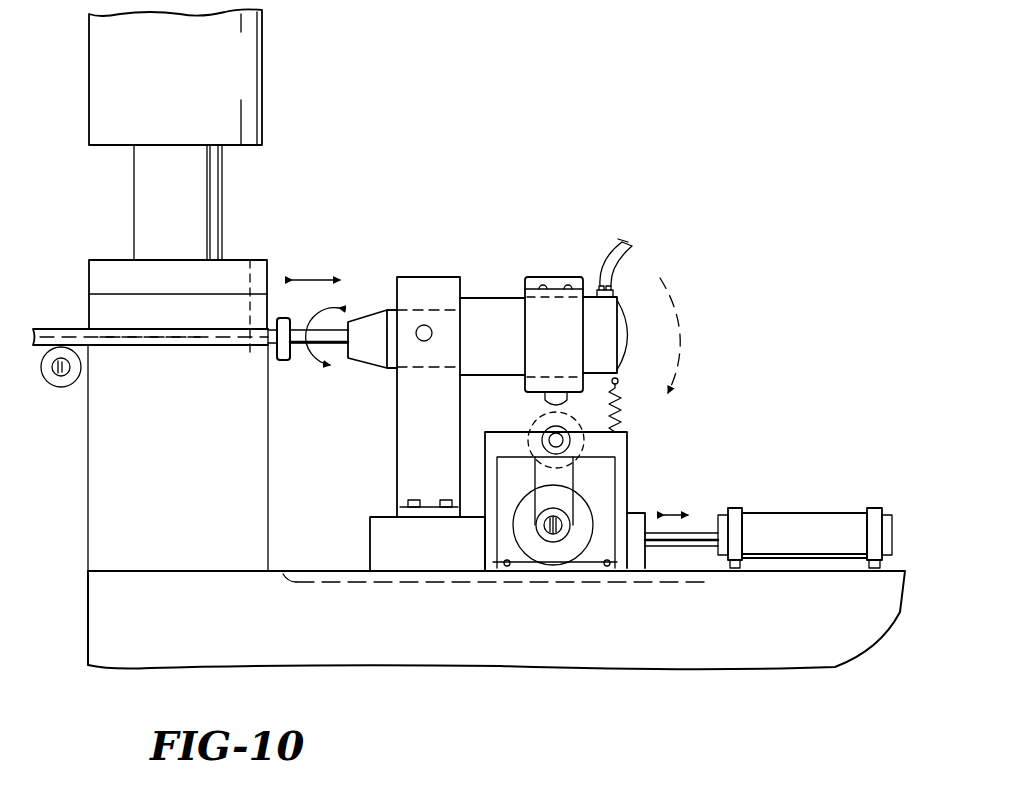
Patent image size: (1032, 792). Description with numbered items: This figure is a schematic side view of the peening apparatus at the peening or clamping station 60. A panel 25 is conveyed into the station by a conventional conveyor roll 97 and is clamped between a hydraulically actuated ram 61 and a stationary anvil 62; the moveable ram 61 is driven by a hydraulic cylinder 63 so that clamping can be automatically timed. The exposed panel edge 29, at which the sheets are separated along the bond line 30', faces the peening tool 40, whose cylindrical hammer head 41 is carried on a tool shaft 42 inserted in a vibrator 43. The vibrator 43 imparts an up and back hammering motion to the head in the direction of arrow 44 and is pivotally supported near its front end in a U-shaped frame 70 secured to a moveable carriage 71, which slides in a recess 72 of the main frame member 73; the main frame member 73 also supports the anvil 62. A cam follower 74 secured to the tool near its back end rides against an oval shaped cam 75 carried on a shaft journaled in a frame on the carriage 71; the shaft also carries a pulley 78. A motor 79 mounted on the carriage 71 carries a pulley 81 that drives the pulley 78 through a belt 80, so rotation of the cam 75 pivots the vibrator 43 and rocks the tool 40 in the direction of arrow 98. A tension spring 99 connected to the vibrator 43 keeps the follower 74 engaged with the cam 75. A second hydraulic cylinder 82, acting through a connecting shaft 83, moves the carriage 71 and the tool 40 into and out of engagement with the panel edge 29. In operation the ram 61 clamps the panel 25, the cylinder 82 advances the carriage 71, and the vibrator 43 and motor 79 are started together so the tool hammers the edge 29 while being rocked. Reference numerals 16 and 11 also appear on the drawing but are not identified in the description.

The peening station 60 is at (305, 213).
The hydraulic cylinder 63 is at (246, 90).
The hydraulically actuated ram 61 is at (243, 257).
The stationary anvil 62 is at (270, 477).
The panel 25 is at (55, 325).
The bond line 30' is at (150, 365).
The roll 97 is at (58, 380).
The cylindrical hammer head 41 is at (270, 350).
The panel edge 29 is at (284, 330).
The tool 40 is at (292, 368).
The arrow 44 is at (318, 272).
The arrow 98 is at (332, 310).
The tool shaft 42 is at (340, 345).
The U-shaped frame 70 is at (432, 290).
The moveable carriage 71 is at (372, 541).
The vibrator 43 is at (495, 305).
The cam follower 74 is at (618, 385).
The pulley 78 is at (600, 413).
The tension spring 99 is at (592, 426).
The frame top 16 is at (572, 433).
The oval shaped cam 75 is at (532, 418).
The frame 11 is at (623, 492).
The belt 80 is at (525, 475).
The motor 79 is at (580, 510).
The pulley 81 is at (558, 540).
The connecting shaft 83 is at (695, 530).
The second hydraulic cylinder 82 is at (822, 517).
The recess 72 is at (698, 570).
The main frame member 73 is at (735, 586).